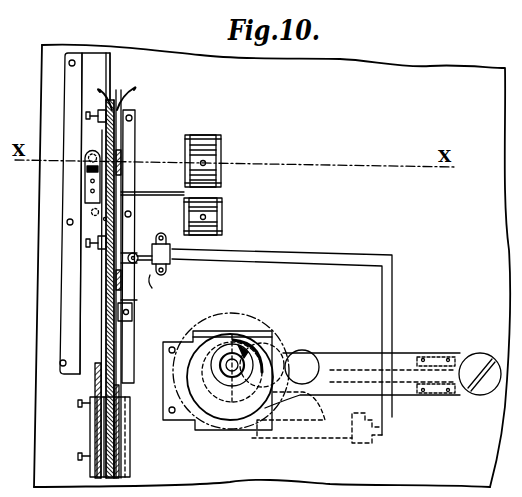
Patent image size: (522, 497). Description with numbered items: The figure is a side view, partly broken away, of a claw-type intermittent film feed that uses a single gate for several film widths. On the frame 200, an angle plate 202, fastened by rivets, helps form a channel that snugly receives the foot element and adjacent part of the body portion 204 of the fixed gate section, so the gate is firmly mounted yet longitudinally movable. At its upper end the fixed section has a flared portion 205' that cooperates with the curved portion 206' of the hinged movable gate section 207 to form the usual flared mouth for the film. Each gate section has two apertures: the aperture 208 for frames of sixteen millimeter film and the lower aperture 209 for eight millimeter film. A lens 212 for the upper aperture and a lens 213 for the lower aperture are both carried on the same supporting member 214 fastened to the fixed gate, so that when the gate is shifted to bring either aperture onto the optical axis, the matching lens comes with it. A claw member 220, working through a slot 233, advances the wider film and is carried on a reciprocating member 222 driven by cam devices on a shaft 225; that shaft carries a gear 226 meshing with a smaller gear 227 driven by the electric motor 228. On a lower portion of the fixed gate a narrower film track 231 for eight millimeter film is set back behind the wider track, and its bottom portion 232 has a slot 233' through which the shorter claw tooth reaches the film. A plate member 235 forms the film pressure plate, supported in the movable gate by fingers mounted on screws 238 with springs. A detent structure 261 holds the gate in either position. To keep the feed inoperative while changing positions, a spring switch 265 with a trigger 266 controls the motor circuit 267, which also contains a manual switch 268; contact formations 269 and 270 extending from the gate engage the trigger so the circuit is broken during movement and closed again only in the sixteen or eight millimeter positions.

The frame 200 is at (379, 72).
The angle plate 202 is at (85, 88).
The body portion 204 is at (33, 327).
The flared portion 205' is at (152, 94).
The curved portion 206' is at (127, 83).
The movable gate section 207 is at (100, 252).
The aperture 208 is at (119, 162).
The aperture 209 is at (104, 218).
The lens 212 is at (222, 162).
The lens 213 is at (223, 219).
The supporting member 214 is at (154, 193).
The claw member 220 is at (162, 362).
The reciprocating member 222 is at (398, 370).
The shaft 225 is at (240, 355).
The gear 226 is at (262, 330).
The smaller gear 227 is at (303, 351).
The electric motor 228 is at (337, 330).
The film track 231 is at (113, 455).
The bottom portion 232 is at (123, 442).
The slot 233 is at (71, 246).
The slot 233' is at (81, 420).
The plate member 235 is at (262, 488).
The fingers and screws 238 is at (85, 117).
The slotted link 261 is at (85, 170).
The spring switch 265 is at (172, 264).
The trigger 266 is at (149, 276).
The circuit 267 is at (250, 262).
The manual switch 268 is at (354, 446).
The contact formation 269 is at (140, 243).
The control formation 270 is at (136, 303).